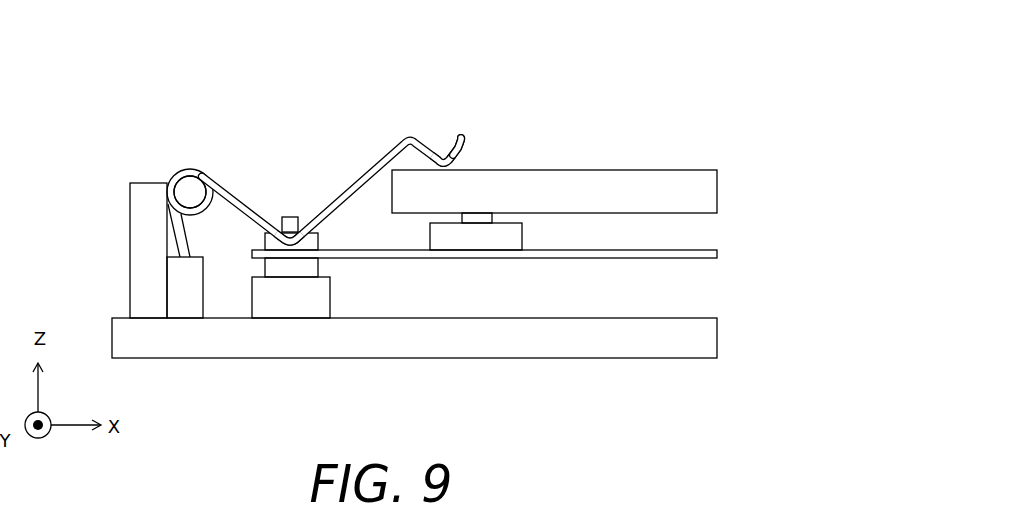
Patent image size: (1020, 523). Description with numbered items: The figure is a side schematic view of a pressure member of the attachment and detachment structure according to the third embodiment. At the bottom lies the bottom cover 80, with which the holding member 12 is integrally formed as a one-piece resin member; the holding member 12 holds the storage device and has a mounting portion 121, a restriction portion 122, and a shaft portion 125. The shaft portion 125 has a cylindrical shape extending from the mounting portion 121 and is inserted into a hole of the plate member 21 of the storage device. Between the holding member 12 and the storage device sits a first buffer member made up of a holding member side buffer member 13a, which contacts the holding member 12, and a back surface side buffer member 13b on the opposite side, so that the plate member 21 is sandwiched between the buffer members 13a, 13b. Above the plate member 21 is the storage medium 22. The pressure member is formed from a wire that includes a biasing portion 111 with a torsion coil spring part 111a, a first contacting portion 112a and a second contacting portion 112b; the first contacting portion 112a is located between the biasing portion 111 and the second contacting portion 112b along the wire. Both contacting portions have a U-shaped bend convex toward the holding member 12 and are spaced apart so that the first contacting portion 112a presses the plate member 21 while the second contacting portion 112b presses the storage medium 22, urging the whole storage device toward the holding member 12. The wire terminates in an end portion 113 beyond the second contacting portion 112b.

The holding member 12 is at (225, 318).
The holding member side buffer member 13a is at (318, 273).
The back surface side buffer member 13b is at (318, 238).
The plate member 21 is at (717, 253).
The storage medium 22 is at (717, 195).
The bottom cover 80 is at (717, 341).
The biasing portion 111 is at (186, 167).
The torsion coil spring part 111a is at (200, 167).
The first contacting portion 112a is at (290, 247).
The second contacting portion 112b is at (455, 167).
The end portion 113 is at (468, 135).
The mounting portion 121 is at (398, 318).
The restriction portion 122 is at (145, 183).
The shaft portion 125 is at (296, 217).